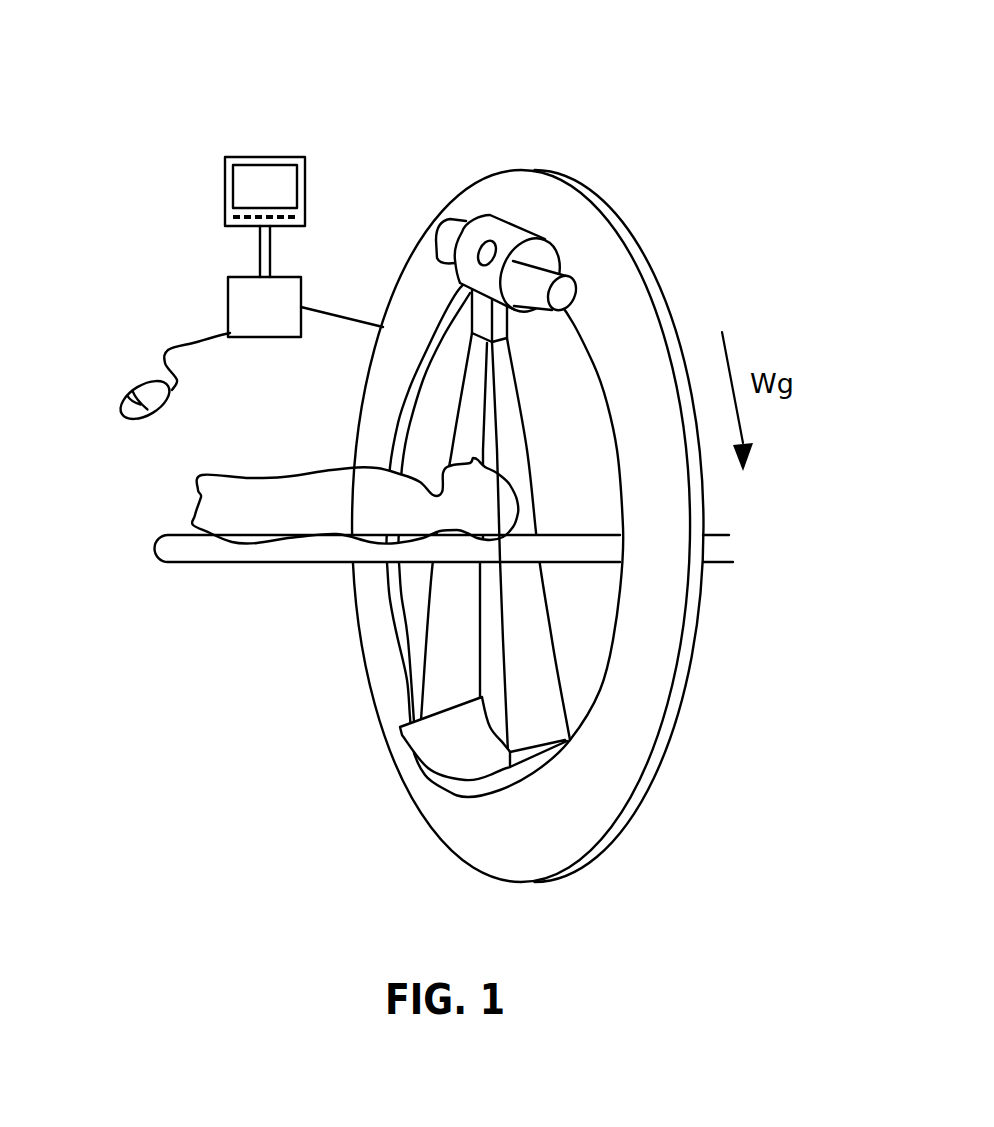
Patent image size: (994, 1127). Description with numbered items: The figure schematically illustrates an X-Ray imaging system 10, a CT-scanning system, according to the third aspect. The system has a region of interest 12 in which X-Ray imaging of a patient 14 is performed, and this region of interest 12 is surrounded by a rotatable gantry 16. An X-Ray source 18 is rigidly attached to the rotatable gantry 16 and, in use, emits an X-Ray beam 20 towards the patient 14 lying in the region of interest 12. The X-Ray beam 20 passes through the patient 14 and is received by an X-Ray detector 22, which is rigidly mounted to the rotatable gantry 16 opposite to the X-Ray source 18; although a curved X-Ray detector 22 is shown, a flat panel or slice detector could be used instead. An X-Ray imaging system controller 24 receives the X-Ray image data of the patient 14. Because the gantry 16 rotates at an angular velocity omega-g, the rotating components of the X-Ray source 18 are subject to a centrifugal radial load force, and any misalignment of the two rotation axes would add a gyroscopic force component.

The X-Ray imaging system 10 is at (502, 449).
The region of interest 12 is at (200, 552).
The patient 14 is at (200, 492).
The rotatable gantry 16 is at (633, 340).
The X-Ray source 18 is at (505, 230).
The X-Ray beam 20 is at (438, 630).
The X-Ray detector 22 is at (425, 765).
The X-Ray imaging system controller 24 is at (228, 290).